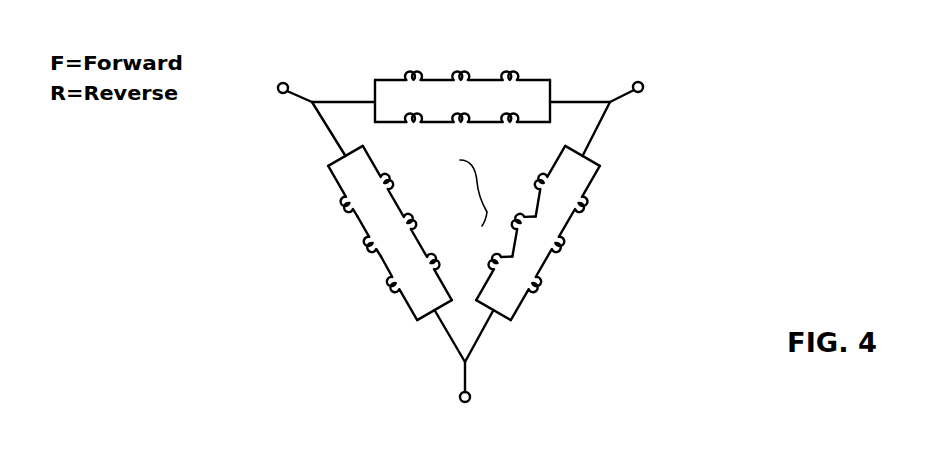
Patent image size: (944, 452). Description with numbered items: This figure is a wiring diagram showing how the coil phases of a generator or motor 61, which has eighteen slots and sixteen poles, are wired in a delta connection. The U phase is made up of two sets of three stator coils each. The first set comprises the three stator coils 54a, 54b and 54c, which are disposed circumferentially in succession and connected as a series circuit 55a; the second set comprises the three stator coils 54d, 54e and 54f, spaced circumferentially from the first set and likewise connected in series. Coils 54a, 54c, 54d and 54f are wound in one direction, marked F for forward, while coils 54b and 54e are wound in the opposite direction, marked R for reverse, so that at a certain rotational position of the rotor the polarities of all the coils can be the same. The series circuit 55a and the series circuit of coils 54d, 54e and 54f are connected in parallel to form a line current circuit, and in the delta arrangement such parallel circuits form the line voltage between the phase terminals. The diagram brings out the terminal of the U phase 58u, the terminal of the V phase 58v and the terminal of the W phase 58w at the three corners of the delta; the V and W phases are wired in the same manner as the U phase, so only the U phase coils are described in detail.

The stator coil 54a is at (340, 200).
The stator coil 54b is at (370, 243).
The stator coil 54c is at (388, 286).
The stator coil 54d is at (383, 178).
The stator coil 54e is at (405, 207).
The stator coil 54f is at (415, 227).
The series circuit 55a is at (304, 233).
The terminal of the U phase 58u is at (288, 84).
The terminal of the V phase 58v is at (642, 92).
The terminal of the W phase 58w is at (470, 395).
The generator or motor 61 is at (383, 253).